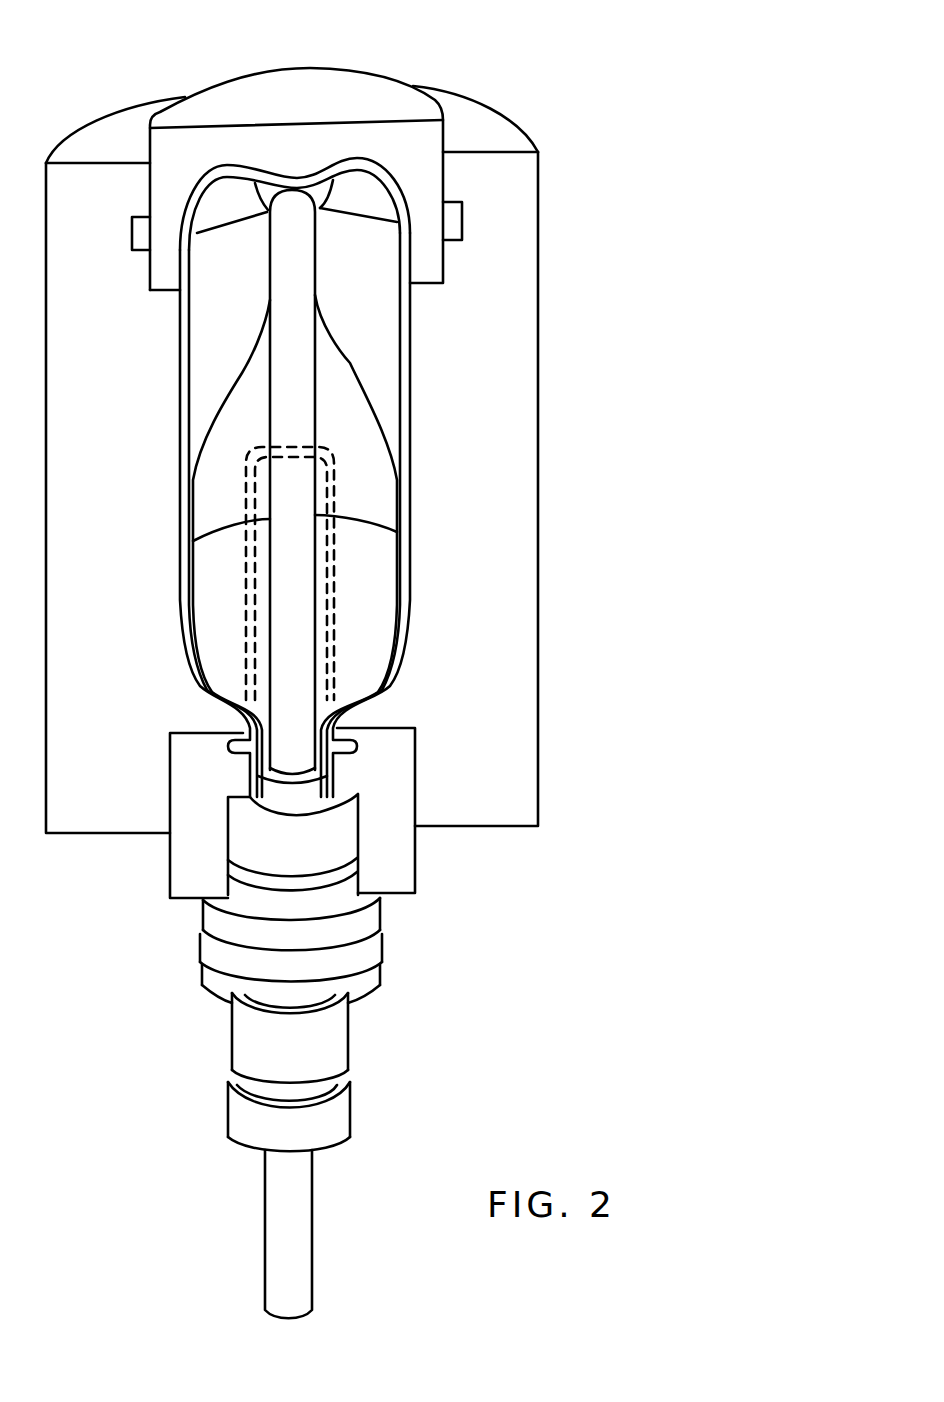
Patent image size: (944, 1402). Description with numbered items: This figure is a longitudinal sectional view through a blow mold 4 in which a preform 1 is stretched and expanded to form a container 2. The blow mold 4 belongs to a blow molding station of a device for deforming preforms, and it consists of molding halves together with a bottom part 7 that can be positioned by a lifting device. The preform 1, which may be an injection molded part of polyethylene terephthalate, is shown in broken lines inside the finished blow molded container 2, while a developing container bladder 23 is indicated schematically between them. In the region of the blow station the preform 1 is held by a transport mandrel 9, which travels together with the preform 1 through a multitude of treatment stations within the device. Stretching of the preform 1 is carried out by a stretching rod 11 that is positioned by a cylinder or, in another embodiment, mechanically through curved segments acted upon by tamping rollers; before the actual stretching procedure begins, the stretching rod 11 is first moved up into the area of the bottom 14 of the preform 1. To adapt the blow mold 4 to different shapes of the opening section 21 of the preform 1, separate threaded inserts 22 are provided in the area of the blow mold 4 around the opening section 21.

The preform 1 is at (334, 615).
The container 2 is at (404, 388).
The blow mold 4 is at (495, 455).
The bottom part 7 is at (382, 87).
The transport mandrel 9 is at (365, 963).
The stretching rod 11 is at (265, 1248).
The bottom 14 is at (330, 448).
The opening section 21 is at (337, 760).
The threaded inserts 22 is at (397, 852).
The container bladder 23 is at (350, 345).